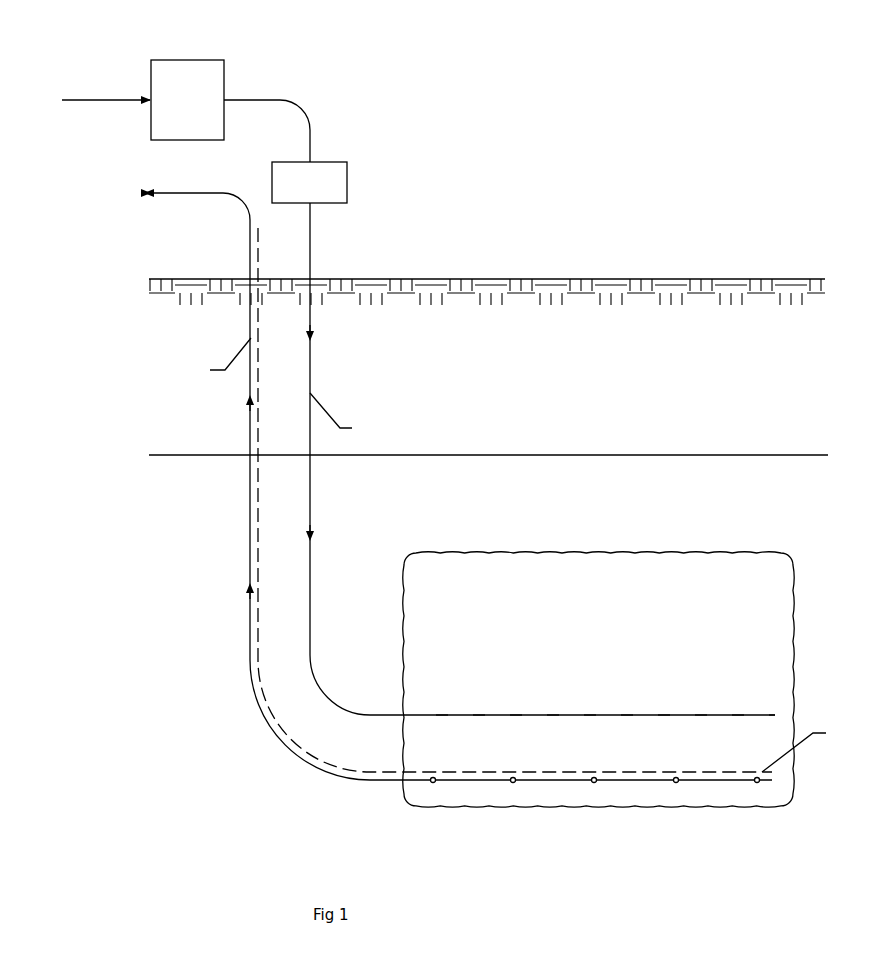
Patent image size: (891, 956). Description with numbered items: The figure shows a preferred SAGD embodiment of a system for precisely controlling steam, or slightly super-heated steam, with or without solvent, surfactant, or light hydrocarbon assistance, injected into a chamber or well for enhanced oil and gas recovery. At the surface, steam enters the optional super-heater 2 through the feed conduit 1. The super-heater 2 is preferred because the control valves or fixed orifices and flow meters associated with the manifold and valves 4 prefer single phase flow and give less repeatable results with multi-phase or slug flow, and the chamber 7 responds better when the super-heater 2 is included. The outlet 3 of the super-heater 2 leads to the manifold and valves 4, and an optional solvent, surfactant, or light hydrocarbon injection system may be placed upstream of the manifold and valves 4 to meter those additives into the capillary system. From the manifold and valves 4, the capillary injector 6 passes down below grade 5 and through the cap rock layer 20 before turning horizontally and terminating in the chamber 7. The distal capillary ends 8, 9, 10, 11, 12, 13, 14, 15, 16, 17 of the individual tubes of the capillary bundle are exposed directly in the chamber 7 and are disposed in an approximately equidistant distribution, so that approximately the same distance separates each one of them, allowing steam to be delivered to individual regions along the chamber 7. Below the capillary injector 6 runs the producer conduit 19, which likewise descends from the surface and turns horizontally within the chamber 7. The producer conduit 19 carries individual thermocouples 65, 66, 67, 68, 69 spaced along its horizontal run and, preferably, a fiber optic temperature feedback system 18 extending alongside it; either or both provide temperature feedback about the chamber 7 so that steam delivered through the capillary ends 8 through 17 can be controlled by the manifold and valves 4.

The feed conduit 1 is at (105, 100).
The super-heater 2 is at (187, 60).
The outlet of super-heater 3 is at (260, 100).
The manifold and valves 4 is at (347, 162).
The grade 5 is at (420, 279).
The capillary injector 6 is at (310, 368).
The chamber 7 is at (585, 553).
The distal capillary end 8 is at (442, 716).
The distal capillary end 9 is at (479, 716).
The distal capillary end 10 is at (516, 716).
The distal capillary end 11 is at (553, 716).
The distal capillary end 12 is at (590, 716).
The distal capillary end 13 is at (627, 716).
The distal capillary end 14 is at (664, 716).
The distal capillary end 15 is at (701, 716).
The distal capillary end 16 is at (738, 716).
The distal capillary end 17 is at (775, 716).
The fiber optic temperature feedback system 18 is at (497, 772).
The producer conduit 19 is at (250, 613).
The cap rock 20 is at (703, 455).
The thermocouple 65 is at (759, 783).
The thermocouple 66 is at (678, 783).
The thermocouple 67 is at (596, 783).
The thermocouple 68 is at (515, 783).
The thermocouple 69 is at (431, 783).